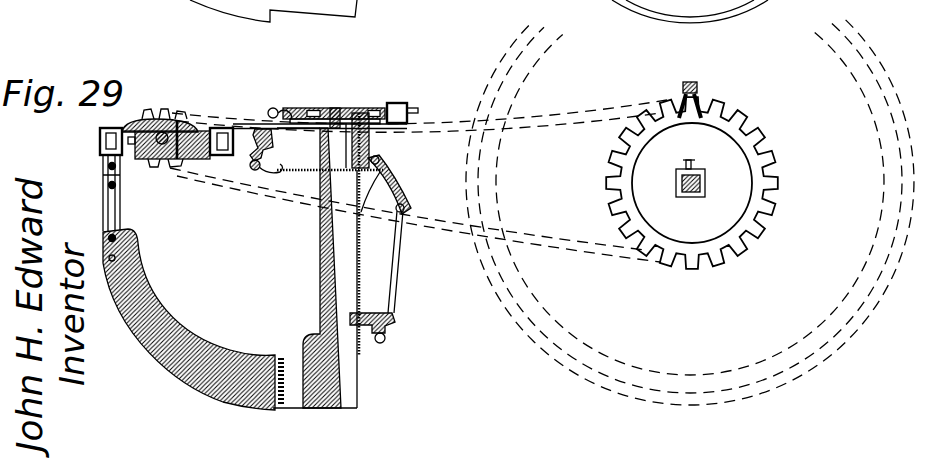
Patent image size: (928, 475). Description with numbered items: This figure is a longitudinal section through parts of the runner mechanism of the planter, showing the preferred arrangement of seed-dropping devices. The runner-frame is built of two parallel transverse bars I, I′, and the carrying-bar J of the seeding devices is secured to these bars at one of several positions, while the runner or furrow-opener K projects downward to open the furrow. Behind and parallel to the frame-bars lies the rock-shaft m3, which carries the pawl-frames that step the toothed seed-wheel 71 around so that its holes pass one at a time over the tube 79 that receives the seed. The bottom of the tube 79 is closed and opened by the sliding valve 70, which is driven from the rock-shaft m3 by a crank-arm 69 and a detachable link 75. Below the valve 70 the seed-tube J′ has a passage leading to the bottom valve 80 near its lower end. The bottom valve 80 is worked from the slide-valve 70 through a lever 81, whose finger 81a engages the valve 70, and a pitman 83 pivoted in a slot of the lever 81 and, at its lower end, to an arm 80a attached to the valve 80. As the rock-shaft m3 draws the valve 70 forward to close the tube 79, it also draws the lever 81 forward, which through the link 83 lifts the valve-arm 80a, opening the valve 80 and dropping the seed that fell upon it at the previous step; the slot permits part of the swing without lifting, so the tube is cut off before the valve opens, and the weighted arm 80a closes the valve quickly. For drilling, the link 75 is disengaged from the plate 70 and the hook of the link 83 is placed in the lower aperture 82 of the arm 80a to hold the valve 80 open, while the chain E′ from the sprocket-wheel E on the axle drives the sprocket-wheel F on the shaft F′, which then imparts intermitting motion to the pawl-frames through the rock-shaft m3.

The crank-arm 69 is at (273, 147).
The sliding valve 70 is at (330, 160).
The toothed seed-wheel 71 is at (318, 110).
The detachable link 75 is at (265, 170).
The tube 79 is at (363, 148).
The bottom valve 80 is at (362, 345).
The valve-arm 80a is at (393, 318).
The lever 81 is at (396, 188).
The finger 81a is at (381, 162).
The lower aperture 82 is at (386, 339).
The pitman 83 is at (395, 267).
The sprocket-wheel E is at (762, 178).
The chain E′ is at (542, 212).
The sprocket-wheel F is at (168, 120).
The shaft F′ is at (162, 133).
The transverse bar I is at (100, 138).
The transverse bar I′ is at (268, 124).
The carrying-bar J is at (315, 289).
The seed-tube J′ is at (320, 262).
The runner K is at (180, 314).
The rock-shaft m3 is at (262, 134).